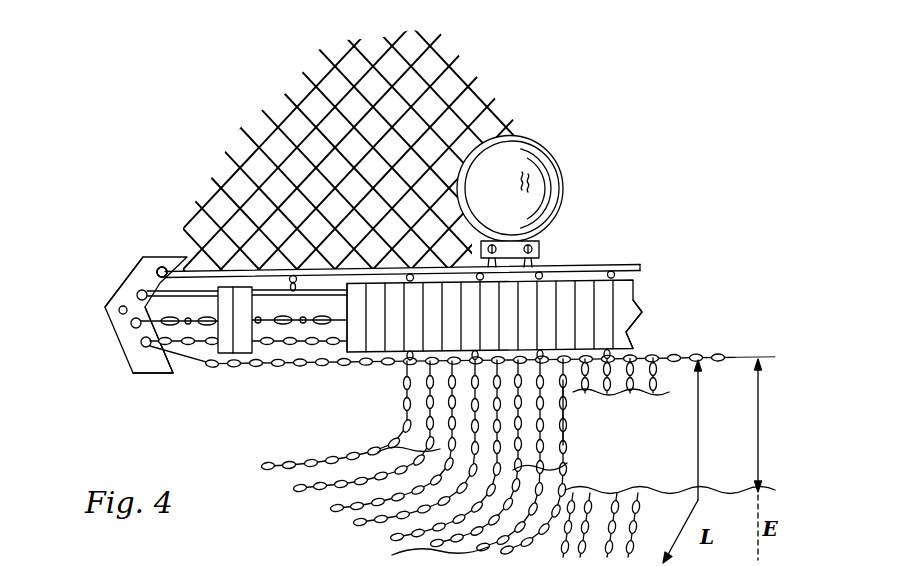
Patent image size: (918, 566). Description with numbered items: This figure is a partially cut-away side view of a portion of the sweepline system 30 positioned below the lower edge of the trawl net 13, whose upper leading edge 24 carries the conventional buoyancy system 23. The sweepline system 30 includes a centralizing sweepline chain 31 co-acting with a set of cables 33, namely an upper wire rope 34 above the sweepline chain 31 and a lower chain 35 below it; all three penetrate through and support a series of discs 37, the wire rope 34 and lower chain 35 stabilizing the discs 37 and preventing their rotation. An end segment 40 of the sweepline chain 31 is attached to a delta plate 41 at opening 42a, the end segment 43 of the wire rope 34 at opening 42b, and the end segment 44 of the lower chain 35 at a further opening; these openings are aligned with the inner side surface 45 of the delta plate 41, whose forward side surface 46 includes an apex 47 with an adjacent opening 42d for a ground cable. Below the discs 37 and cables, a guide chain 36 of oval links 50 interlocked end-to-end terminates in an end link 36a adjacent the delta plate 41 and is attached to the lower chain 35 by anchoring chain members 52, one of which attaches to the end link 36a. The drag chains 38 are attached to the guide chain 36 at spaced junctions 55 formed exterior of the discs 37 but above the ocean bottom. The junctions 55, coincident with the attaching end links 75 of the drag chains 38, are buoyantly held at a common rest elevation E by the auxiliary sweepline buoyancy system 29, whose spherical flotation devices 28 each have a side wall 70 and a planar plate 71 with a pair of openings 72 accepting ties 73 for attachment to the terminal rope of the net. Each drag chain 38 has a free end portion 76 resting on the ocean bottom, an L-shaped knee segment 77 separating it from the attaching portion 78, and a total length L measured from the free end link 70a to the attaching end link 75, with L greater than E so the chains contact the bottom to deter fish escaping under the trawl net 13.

The trawl net 13 is at (499, 89).
The buoyancy system 23 is at (639, 253).
The upper leading edge 24 is at (603, 265).
The flotation device 28 is at (545, 142).
The auxiliary sweepline buoyancy system 29 is at (622, 137).
The sweepline system 30 is at (677, 266).
The sweepline chain 31 is at (202, 316).
The set of cables 33 is at (158, 269).
The upper wire rope 34 is at (181, 289).
The lower chain 35 is at (190, 345).
The guide chain 36 is at (342, 382).
The end link 36a is at (212, 362).
The discs 37 is at (345, 346).
The drag chains 38 is at (580, 440).
The end segment 40 is at (145, 347).
The delta plate 41 is at (157, 374).
The opening 42a is at (134, 328).
The opening 42b is at (157, 278).
The opening 42d is at (137, 295).
The end segment 43 is at (157, 275).
The end segment 44 is at (150, 350).
The inner side surface 45 is at (174, 358).
The forward side surface 46 is at (131, 323).
The apex 47 is at (105, 308).
The links 50 is at (268, 365).
The anchoring chain members 52 is at (640, 356).
The junctions 55 is at (472, 362).
The side wall 70 is at (530, 179).
The chain bottom line 70a is at (392, 555).
The planar plate 71 is at (540, 247).
The openings 72 is at (528, 246).
The ties 73 is at (472, 248).
The attaching end links 75 is at (428, 366).
The free end portion 76 is at (378, 452).
The knee segment 77 is at (567, 464).
The attaching portion 78 is at (567, 418).